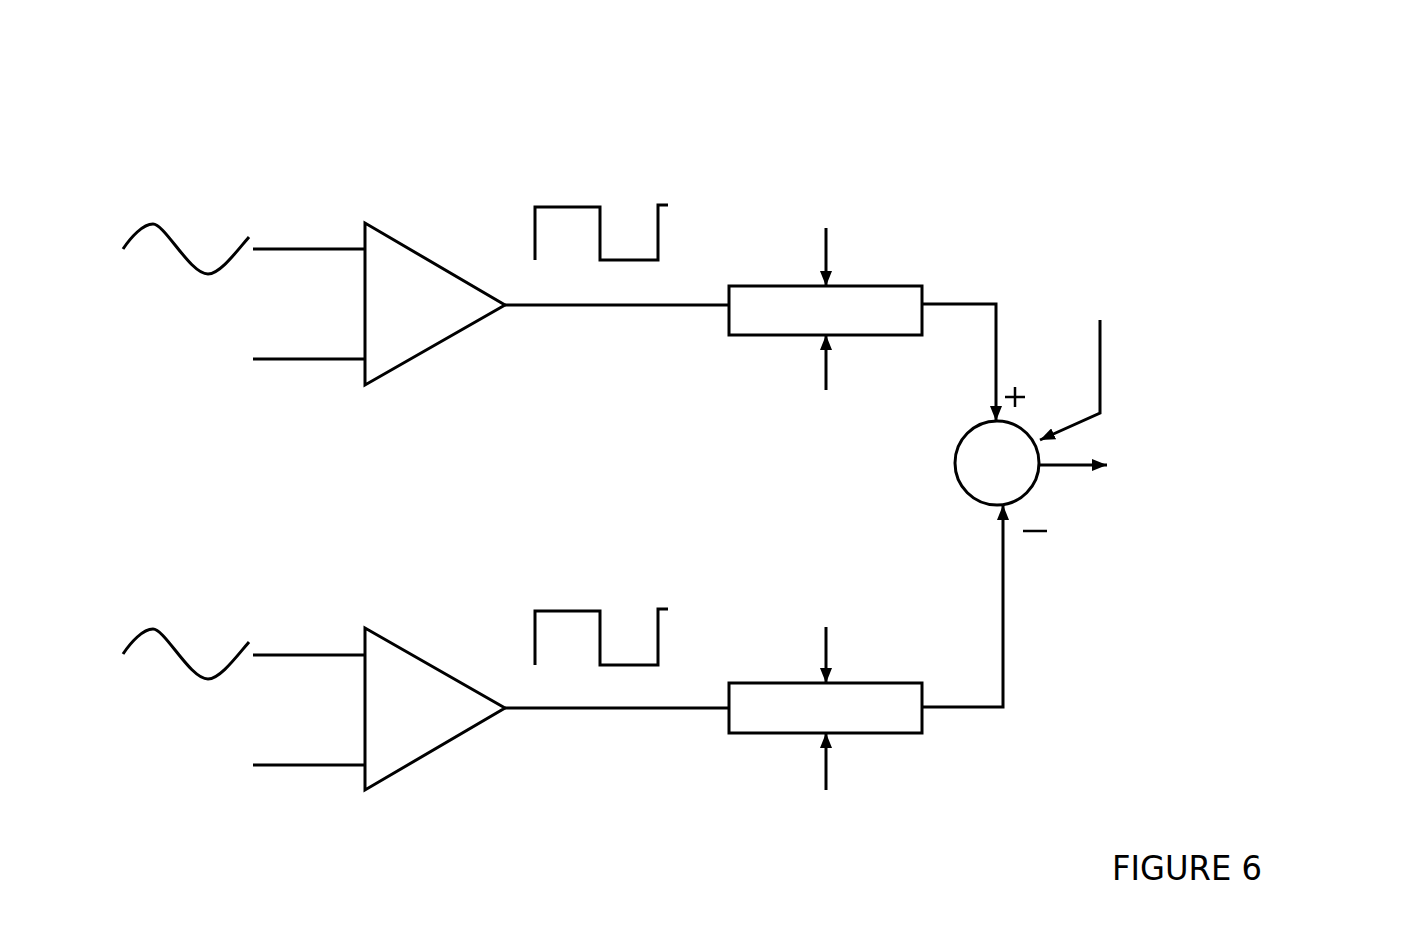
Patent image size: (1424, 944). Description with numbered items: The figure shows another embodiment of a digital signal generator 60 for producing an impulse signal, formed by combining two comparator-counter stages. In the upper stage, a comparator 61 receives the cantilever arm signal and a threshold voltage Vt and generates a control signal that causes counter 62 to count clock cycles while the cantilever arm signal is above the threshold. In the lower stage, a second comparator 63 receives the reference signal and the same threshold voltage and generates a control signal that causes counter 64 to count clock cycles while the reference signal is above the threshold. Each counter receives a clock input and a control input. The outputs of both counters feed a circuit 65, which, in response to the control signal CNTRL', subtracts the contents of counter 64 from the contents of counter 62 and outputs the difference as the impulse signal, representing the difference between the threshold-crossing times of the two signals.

The signal generator 60 is at (138, 79).
The comparator 61 is at (433, 340).
The counter 62 is at (760, 338).
The second comparator 63 is at (433, 745).
The counter 64 is at (760, 736).
The circuit 65 is at (965, 462).